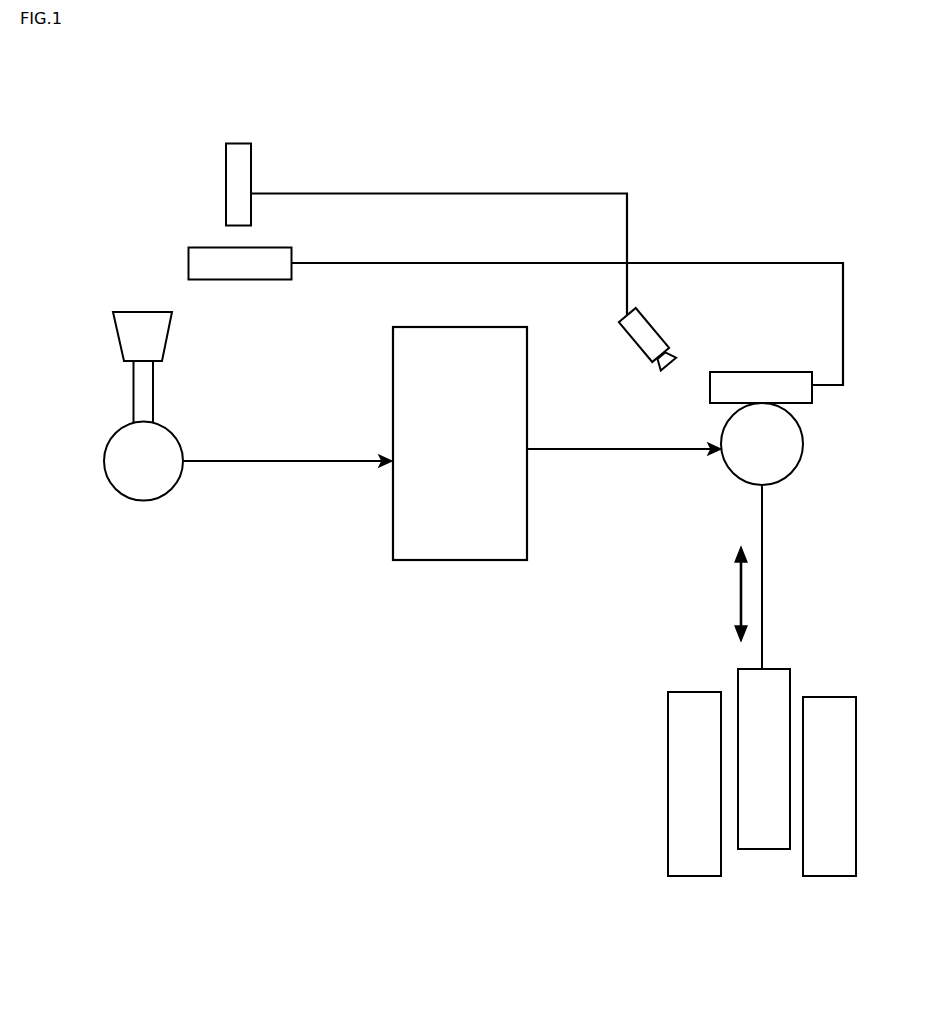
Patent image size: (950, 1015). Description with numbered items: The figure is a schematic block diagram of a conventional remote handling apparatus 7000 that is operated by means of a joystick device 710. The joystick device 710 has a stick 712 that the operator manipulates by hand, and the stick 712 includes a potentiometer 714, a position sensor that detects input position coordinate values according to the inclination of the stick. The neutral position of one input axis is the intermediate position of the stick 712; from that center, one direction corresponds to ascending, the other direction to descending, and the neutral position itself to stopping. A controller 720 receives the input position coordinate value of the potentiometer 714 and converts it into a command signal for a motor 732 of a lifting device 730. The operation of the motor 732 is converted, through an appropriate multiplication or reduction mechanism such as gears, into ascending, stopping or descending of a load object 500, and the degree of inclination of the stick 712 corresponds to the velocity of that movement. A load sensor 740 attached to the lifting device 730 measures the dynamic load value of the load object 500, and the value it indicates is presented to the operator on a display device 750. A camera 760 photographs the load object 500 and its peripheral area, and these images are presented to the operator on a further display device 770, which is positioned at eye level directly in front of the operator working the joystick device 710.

The remote handling apparatus 7000 is at (210, 78).
The joystick device 710 is at (93, 315).
The stick 712 is at (137, 386).
The potentiometer 714 is at (143, 487).
The controller 720 is at (457, 548).
The lifting device 730 is at (832, 435).
The motor 732 is at (725, 476).
The load sensor 740 is at (760, 371).
The display device 750 is at (271, 282).
The camera 760 is at (653, 327).
The display device 770 is at (251, 166).
The load object 500 is at (736, 666).